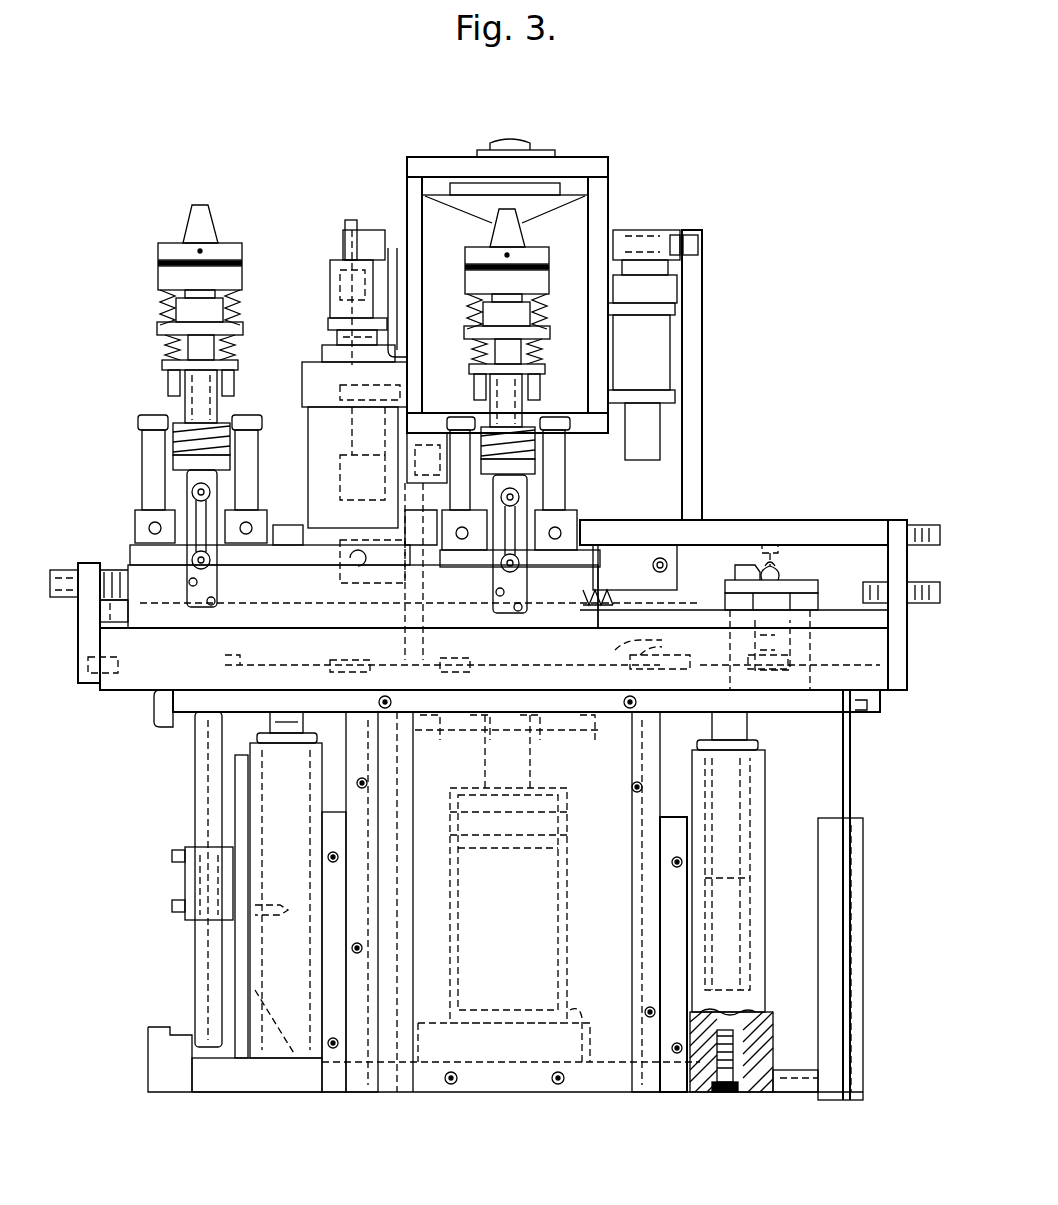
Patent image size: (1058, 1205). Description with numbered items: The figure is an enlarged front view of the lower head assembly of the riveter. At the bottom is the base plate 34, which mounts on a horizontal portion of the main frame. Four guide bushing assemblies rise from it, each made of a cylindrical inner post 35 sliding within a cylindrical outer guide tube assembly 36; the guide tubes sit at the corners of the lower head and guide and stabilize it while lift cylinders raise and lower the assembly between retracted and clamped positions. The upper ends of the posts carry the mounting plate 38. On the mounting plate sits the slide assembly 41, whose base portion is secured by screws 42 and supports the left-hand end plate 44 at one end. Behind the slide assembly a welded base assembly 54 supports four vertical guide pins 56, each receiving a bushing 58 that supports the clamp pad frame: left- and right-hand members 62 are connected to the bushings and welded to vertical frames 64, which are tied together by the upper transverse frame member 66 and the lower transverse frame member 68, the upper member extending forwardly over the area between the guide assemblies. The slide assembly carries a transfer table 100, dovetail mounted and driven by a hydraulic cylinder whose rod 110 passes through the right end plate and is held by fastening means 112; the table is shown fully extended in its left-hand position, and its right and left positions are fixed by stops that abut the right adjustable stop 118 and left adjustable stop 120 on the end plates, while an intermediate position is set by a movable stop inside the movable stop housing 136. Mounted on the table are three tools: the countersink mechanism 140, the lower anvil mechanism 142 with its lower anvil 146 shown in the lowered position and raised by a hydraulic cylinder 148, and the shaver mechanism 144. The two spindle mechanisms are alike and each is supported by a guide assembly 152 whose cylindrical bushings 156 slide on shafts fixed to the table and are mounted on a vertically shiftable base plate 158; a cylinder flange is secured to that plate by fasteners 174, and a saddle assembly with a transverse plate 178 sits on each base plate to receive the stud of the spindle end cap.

The base plate 34 is at (222, 1085).
The cylindrical inner posts 35 is at (303, 713).
The cylindrical outer guide tube assemblies 36 is at (260, 805).
The mounting plate 38 is at (186, 713).
The slide assembly 41 is at (848, 656).
The screws 42 is at (810, 740).
The left-hand end plate 44 is at (85, 632).
The welded base assembly 54 is at (436, 486).
The guide pins 56 is at (650, 418).
The bushings 58 is at (665, 341).
The left-hand and right-hand members 62 is at (672, 288).
The vertical frames 64 is at (407, 180).
The upper transversely extending frame member 66 is at (598, 120).
The lower transversely extending frame member 68 is at (584, 414).
The transfer table 100 is at (128, 550).
The rod 110 is at (845, 487).
The fastening means 112 is at (909, 526).
The right adjustable stop 118 is at (880, 587).
The left adjustable stop 120 is at (128, 573).
The movable stop housing 136 is at (826, 563).
The countersink mechanism 140 is at (578, 228).
The lower anvil mechanism 142 is at (344, 200).
The shaver mechanism 144 is at (210, 196).
The lower anvil 146 is at (344, 221).
The hydraulic cylinder 148 is at (308, 460).
The guide assembly 152 is at (121, 420).
The cylindrical bushing 156 is at (140, 524).
The vertically shiftable base plate 158 is at (242, 556).
The fasteners 174 is at (545, 482).
The transverse plate 178 is at (226, 494).